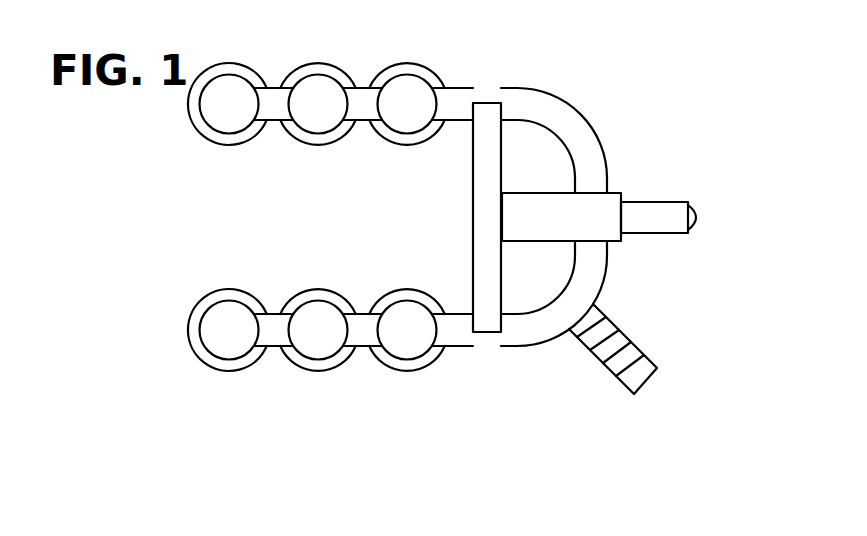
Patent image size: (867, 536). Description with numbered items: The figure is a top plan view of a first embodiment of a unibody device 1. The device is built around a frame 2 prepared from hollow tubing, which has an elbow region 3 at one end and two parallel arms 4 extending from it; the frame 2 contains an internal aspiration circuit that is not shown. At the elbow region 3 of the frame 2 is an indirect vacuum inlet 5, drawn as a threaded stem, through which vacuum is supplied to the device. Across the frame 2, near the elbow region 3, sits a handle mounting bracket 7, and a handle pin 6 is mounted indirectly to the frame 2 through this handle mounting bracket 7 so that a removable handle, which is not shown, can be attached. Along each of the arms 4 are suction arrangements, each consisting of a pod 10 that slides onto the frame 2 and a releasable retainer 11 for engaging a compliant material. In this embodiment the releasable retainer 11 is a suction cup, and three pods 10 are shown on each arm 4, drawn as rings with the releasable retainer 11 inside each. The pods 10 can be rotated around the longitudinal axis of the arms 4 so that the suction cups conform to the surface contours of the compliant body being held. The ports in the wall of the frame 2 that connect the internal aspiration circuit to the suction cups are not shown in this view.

The unibody device 1 is at (607, 83).
The frame 2 is at (463, 348).
The elbow region 3 is at (600, 144).
The arms 4 is at (279, 348).
The indirect vacuum inlet 5 is at (660, 371).
The handle pin 6 is at (700, 220).
The handle mounting bracket 7 is at (473, 225).
The pod 10 is at (234, 80).
The releasable retainer 11 is at (233, 292).